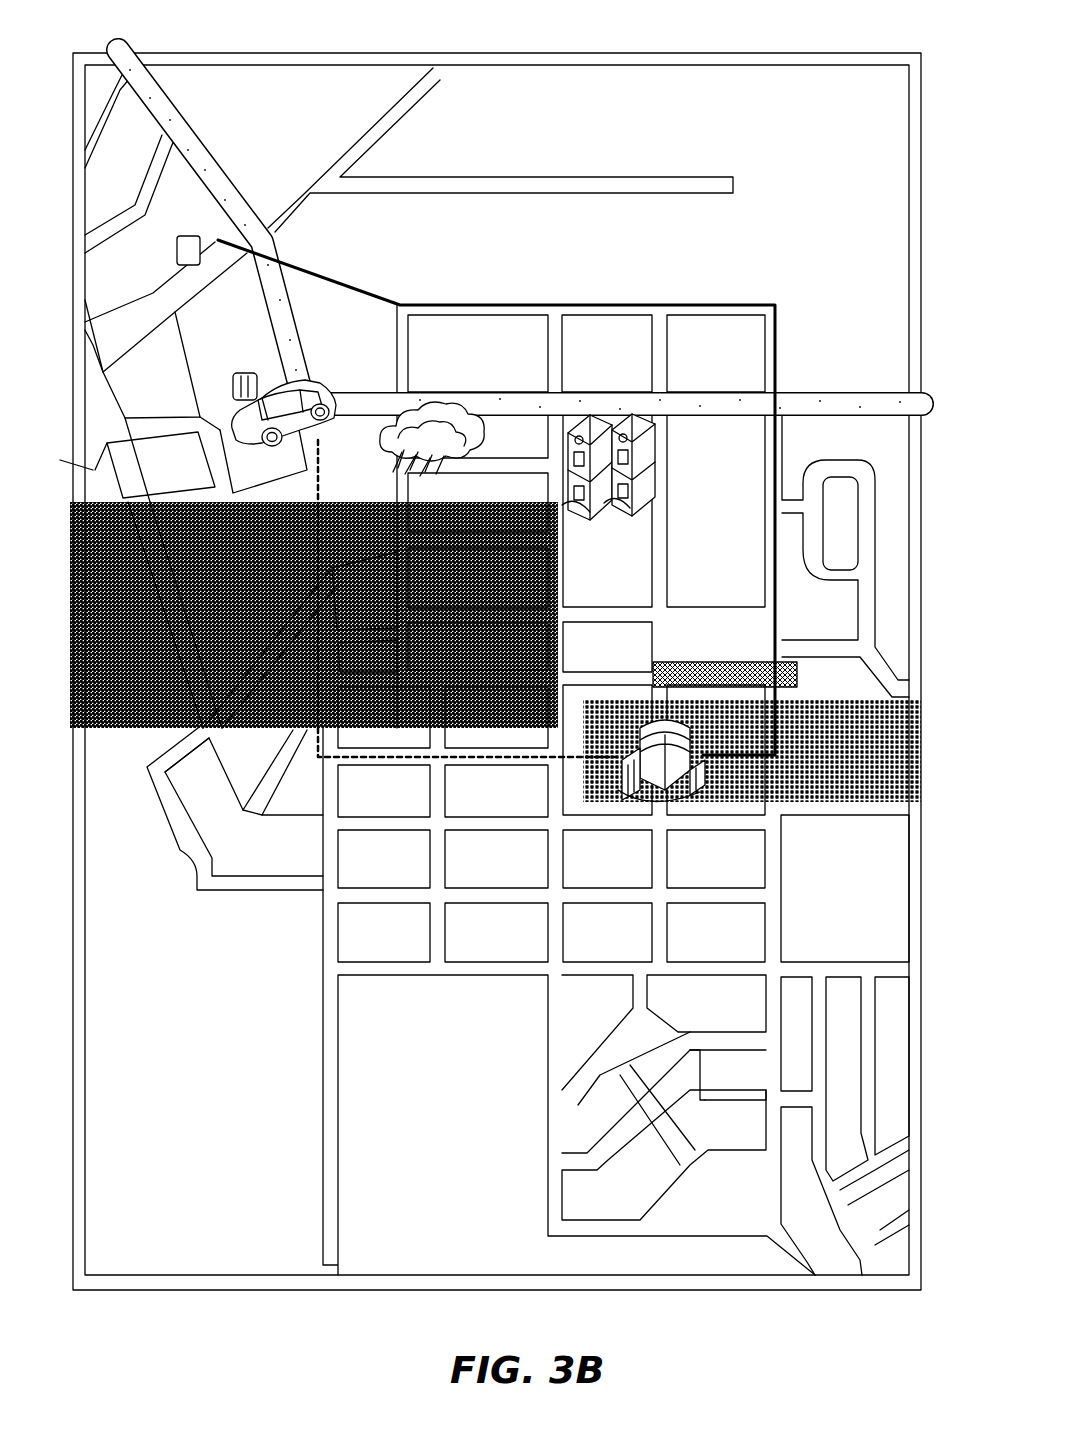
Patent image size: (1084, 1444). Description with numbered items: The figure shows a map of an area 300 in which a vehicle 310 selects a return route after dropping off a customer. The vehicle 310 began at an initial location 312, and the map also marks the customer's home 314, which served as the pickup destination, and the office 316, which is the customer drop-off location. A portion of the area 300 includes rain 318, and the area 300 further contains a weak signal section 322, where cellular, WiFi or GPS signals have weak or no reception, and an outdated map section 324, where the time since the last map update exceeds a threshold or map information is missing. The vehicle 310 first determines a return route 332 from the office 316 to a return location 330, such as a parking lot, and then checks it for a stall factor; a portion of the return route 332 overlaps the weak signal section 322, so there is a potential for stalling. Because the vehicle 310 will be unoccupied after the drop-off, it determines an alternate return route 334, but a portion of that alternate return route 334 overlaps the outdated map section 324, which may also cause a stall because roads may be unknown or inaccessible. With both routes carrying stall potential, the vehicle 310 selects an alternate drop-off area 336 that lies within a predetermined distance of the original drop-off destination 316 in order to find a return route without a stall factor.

The area 300 is at (736, 60).
The vehicle 310 is at (333, 378).
The initial location 312 is at (246, 371).
The home 314 is at (612, 512).
The office 316 is at (626, 792).
The rain 318 is at (428, 398).
The weak signal section 322 is at (803, 696).
The outdated map section 324 is at (573, 652).
The return location 330 is at (175, 258).
The return route 332 is at (632, 303).
The alternate return route 334 is at (405, 768).
The alternate drop-off area 336 is at (708, 660).